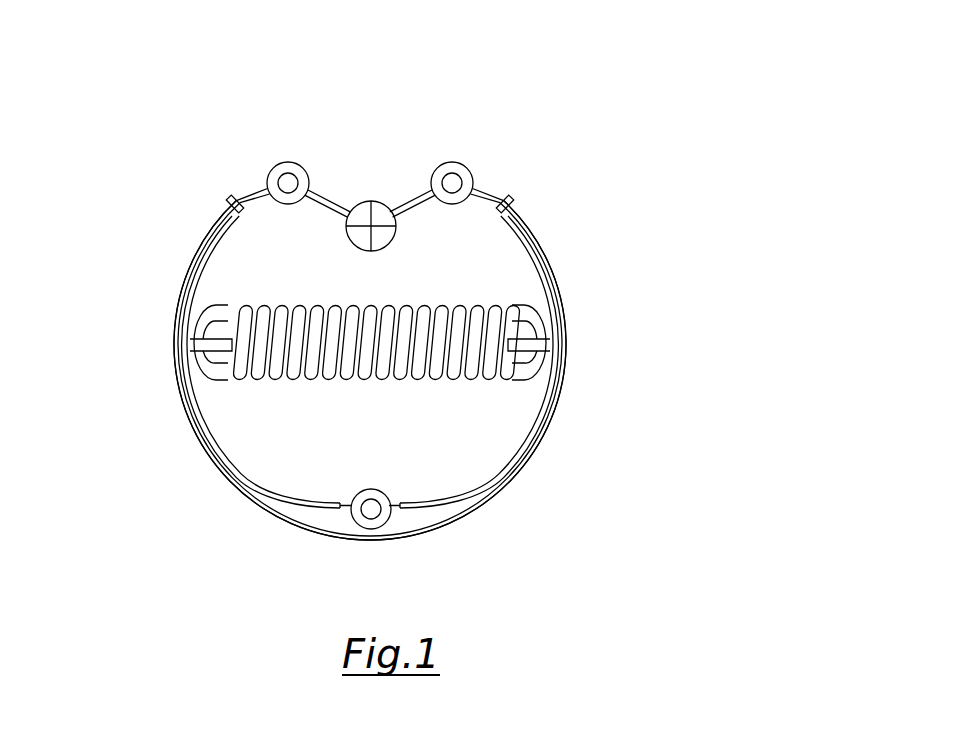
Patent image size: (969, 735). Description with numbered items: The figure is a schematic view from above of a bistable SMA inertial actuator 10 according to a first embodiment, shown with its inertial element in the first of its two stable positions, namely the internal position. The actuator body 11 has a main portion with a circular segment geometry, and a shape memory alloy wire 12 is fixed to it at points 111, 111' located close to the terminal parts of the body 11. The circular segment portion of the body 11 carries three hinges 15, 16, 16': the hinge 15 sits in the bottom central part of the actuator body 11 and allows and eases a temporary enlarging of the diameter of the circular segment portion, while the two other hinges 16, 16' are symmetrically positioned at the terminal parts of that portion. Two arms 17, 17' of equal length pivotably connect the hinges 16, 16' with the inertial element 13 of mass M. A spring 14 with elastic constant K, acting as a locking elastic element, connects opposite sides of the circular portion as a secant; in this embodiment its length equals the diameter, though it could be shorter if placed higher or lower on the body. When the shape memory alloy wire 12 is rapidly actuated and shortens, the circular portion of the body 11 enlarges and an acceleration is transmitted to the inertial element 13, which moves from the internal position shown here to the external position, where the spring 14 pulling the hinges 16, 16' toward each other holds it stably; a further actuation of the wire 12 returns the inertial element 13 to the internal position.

The bistable SMA inertial actuator 10 is at (547, 157).
The actuator body 11 is at (499, 463).
The shape memory alloy wire 12 is at (224, 474).
The inertial element 13 is at (368, 216).
The spring 14 is at (340, 352).
The hinge 15 is at (375, 512).
The hinge 16 is at (252, 151).
The hinge 16' is at (474, 148).
The arm 17 is at (208, 271).
The arm 17' is at (535, 305).
The fixing point 111 is at (156, 201).
The fixing point 111' is at (578, 236).